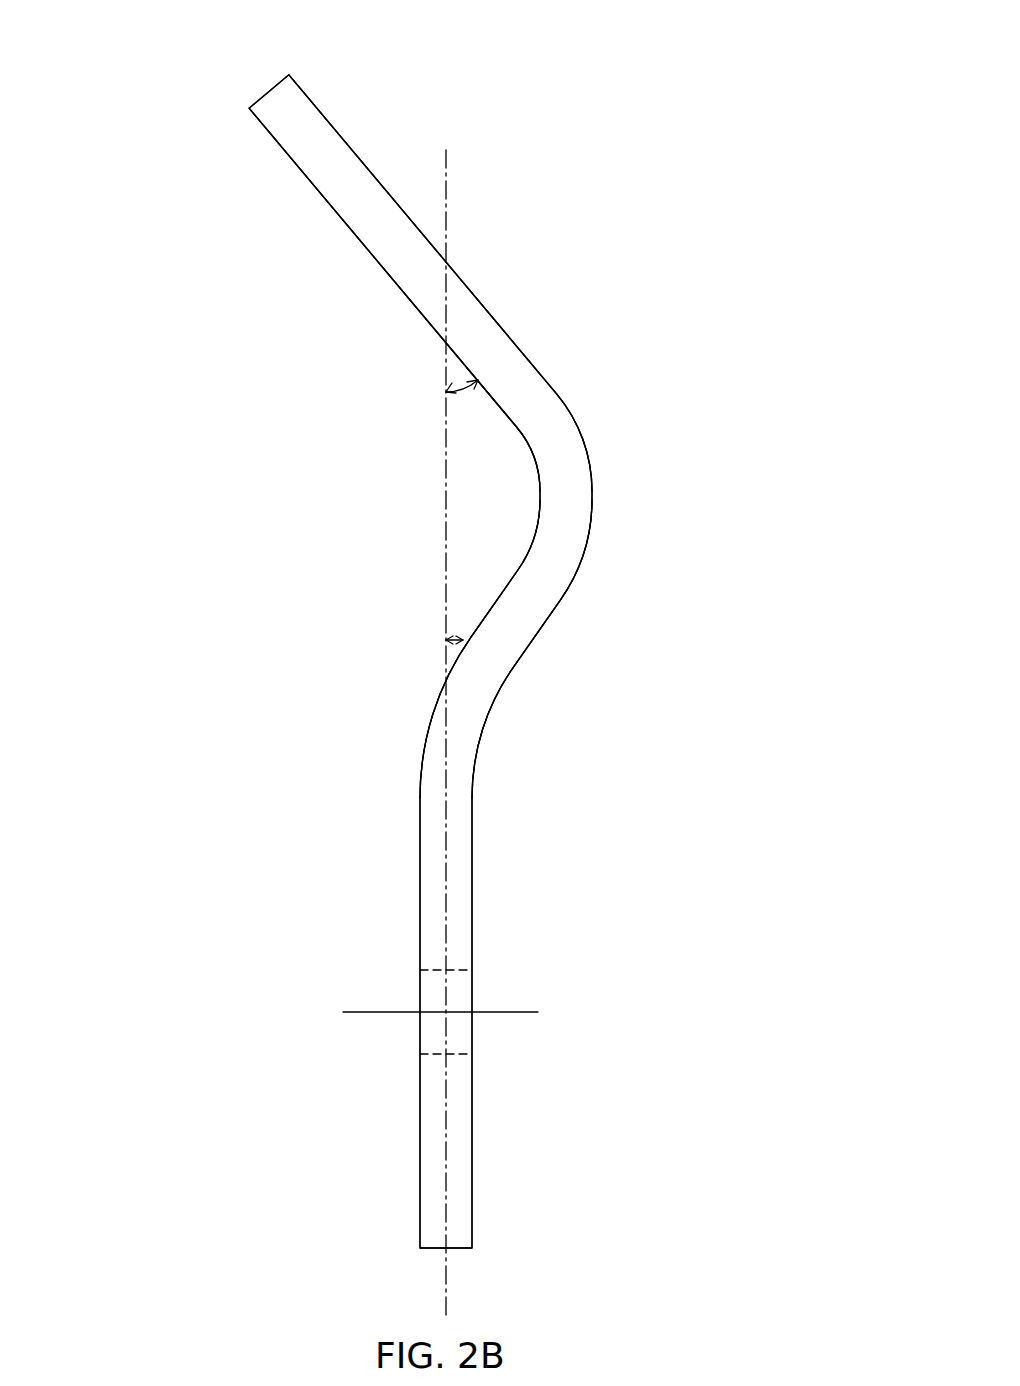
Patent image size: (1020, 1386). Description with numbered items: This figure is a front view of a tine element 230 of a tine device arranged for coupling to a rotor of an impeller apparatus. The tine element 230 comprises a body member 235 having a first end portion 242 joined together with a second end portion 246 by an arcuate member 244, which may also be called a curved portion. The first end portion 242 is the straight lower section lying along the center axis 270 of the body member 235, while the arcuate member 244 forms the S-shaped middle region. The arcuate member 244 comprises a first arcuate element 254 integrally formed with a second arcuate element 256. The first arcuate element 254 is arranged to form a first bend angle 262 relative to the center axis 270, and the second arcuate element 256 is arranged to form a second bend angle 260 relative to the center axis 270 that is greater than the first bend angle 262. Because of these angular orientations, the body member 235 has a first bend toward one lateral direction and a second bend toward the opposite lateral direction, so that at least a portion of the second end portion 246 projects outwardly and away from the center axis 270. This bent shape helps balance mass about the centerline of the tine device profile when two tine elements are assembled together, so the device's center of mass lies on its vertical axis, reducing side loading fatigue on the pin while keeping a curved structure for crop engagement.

The tine element 230 is at (608, 57).
The body member 235 is at (237, 272).
The first end portion 242 is at (545, 825).
The arcuate member 244 is at (677, 378).
The second end portion 246 is at (333, 25).
The first arcuate element 254 is at (490, 710).
The second arcuate element 256 is at (590, 517).
The second bend angle 260 is at (462, 389).
The first bend angle 262 is at (453, 636).
The center axis 270 is at (447, 945).